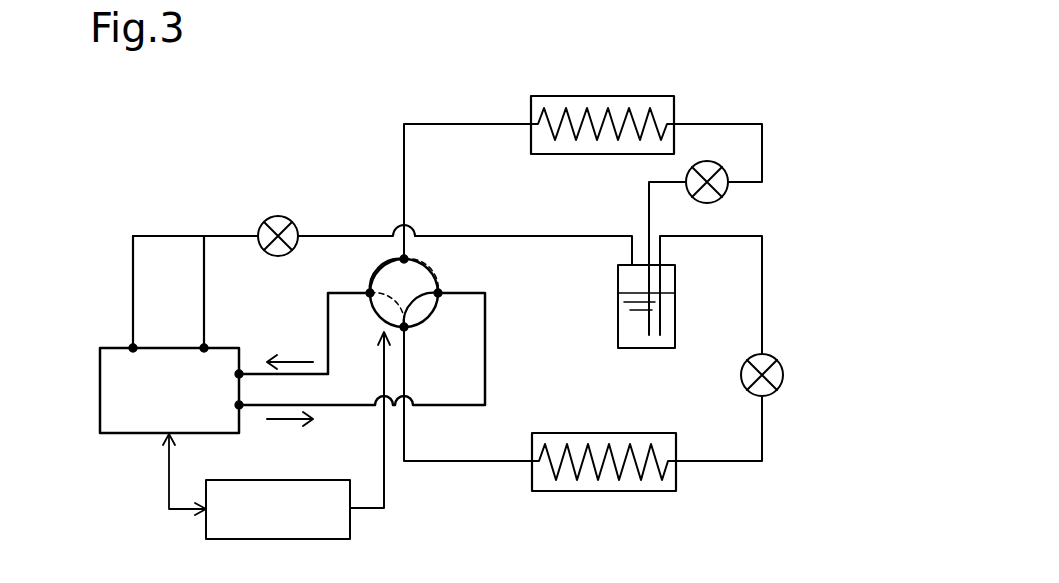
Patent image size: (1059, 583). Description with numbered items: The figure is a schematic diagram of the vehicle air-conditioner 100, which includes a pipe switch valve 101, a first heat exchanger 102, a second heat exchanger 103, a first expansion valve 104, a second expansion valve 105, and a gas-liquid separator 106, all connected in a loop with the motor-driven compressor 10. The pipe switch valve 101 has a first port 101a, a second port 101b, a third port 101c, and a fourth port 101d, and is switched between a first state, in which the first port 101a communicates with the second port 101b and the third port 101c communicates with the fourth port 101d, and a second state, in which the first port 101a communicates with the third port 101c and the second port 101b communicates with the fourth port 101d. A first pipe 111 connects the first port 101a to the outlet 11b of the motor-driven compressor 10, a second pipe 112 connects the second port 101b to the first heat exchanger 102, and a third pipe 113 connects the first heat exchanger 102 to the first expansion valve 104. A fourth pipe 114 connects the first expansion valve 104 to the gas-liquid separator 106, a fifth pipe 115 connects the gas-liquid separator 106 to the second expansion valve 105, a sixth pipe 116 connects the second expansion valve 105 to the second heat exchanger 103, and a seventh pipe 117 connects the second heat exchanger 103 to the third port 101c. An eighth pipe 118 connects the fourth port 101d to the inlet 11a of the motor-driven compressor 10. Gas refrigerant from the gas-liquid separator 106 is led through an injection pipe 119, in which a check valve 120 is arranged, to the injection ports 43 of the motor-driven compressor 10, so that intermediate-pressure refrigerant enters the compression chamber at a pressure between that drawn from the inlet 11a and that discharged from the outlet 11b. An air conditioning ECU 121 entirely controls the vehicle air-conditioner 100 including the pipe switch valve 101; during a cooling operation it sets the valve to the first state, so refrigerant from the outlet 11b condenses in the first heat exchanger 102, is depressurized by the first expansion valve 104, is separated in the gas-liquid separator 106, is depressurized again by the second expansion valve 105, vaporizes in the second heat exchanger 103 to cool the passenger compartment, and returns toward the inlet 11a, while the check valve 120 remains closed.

The motor-driven compressor 10 is at (115, 346).
The injection ports 43 is at (204, 346).
The inlet 11a is at (240, 370).
The outlet 11b is at (240, 408).
The vehicle air-conditioner 100 is at (215, 165).
The pipe switch valve 101 is at (438, 304).
The first port 101a is at (441, 291).
The second port 101b is at (407, 330).
The third port 101c is at (401, 259).
The fourth port 101d is at (367, 292).
The first heat exchanger 102 is at (604, 492).
The second heat exchanger 103 is at (648, 96).
The first expansion valve 104 is at (784, 371).
The second expansion valve 105 is at (724, 196).
The gas-liquid separator 106 is at (633, 349).
The first pipe 111 is at (350, 409).
The second pipe 112 is at (415, 464).
The third pipe 113 is at (735, 463).
The fourth pipe 114 is at (762, 283).
The fifth pipe 115 is at (648, 203).
The sixth pipe 116 is at (762, 143).
The seventh pipe 117 is at (458, 122).
The eighth pipe 118 is at (327, 319).
The injection pipe 119 is at (520, 233).
The check valve 120 is at (288, 218).
The air conditioning ECU 121 is at (351, 522).